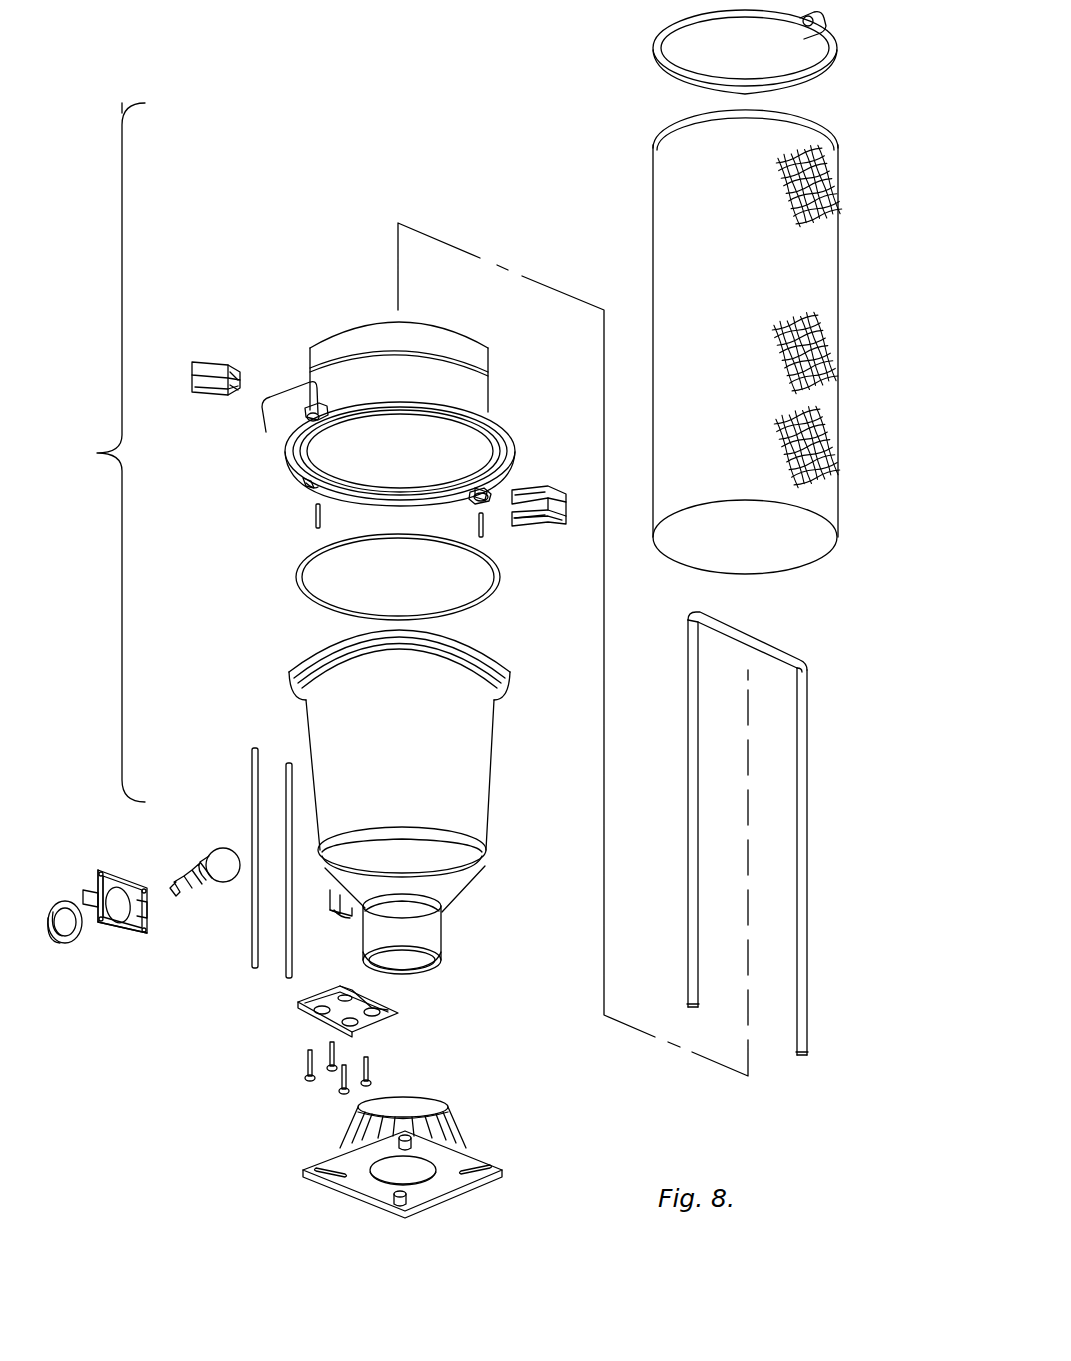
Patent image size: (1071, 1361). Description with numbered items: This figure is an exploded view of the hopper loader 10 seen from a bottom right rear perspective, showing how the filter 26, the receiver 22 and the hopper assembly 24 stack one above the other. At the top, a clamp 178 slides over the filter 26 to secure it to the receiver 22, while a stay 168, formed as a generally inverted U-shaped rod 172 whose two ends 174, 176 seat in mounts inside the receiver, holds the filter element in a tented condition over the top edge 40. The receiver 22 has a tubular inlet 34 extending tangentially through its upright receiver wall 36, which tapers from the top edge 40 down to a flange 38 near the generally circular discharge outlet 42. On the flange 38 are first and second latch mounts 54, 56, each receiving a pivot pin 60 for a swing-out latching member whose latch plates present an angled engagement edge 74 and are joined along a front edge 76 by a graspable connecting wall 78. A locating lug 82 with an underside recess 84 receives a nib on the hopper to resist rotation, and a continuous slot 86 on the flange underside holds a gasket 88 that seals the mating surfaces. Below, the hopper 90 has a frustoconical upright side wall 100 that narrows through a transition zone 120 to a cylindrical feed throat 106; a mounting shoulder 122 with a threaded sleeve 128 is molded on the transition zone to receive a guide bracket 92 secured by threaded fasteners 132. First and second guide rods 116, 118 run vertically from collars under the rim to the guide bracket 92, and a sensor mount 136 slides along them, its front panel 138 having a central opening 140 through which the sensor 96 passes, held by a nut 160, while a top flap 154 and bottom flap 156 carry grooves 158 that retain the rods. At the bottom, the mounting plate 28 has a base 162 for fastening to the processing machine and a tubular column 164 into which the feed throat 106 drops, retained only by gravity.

The hopper loader 10 is at (243, 1102).
The receiver 22 is at (490, 395).
The hopper assembly 24 is at (433, 802).
The filter 26 is at (655, 185).
The mounting plate 28 is at (426, 1149).
The tubular inlet 34 is at (292, 400).
The upright receiver wall 36 is at (300, 454).
The flange 38 is at (294, 440).
The top edge 40 is at (365, 325).
The discharge outlet 42 is at (414, 470).
The first latch mount 54 is at (483, 503).
The second latch mount 56 is at (332, 414).
The pivot pin 60 is at (322, 517).
The engagement edge 74 is at (235, 395).
The front edge 76 is at (205, 395).
The connecting wall 78 is at (218, 366).
The locating lug 82 is at (305, 480).
The recess 84 is at (312, 482).
The continuous slot 86 is at (488, 440).
The gasket 88 is at (305, 585).
The hopper 90 is at (493, 720).
The guide bracket 92 is at (298, 1010).
The sensor 96 is at (194, 895).
The upright side wall 100 is at (490, 755).
The feed throat 106 is at (440, 945).
The first guide rod 116 is at (292, 776).
The second guide rod 118 is at (250, 752).
The transition zone 120 is at (470, 882).
The mounting shoulder 122 is at (336, 910).
The second internally threaded sleeve 128 is at (340, 905).
The threaded fasteners 132 is at (370, 1066).
The sensor mount 136 is at (122, 932).
The front panel 138 is at (98, 882).
The central opening 140 is at (132, 890).
The top flap 154 is at (120, 888).
The bottom flap 156 is at (130, 927).
The grooves 158 is at (104, 874).
The nut 160 is at (60, 945).
The base 162 is at (470, 1160).
The tubular column 164 is at (432, 1110).
The stay 168 is at (807, 690).
The inverted U-shaped rod 172 is at (737, 864).
The end 174 is at (802, 1058).
The end 176 is at (690, 1005).
The clamp 178 is at (660, 37).